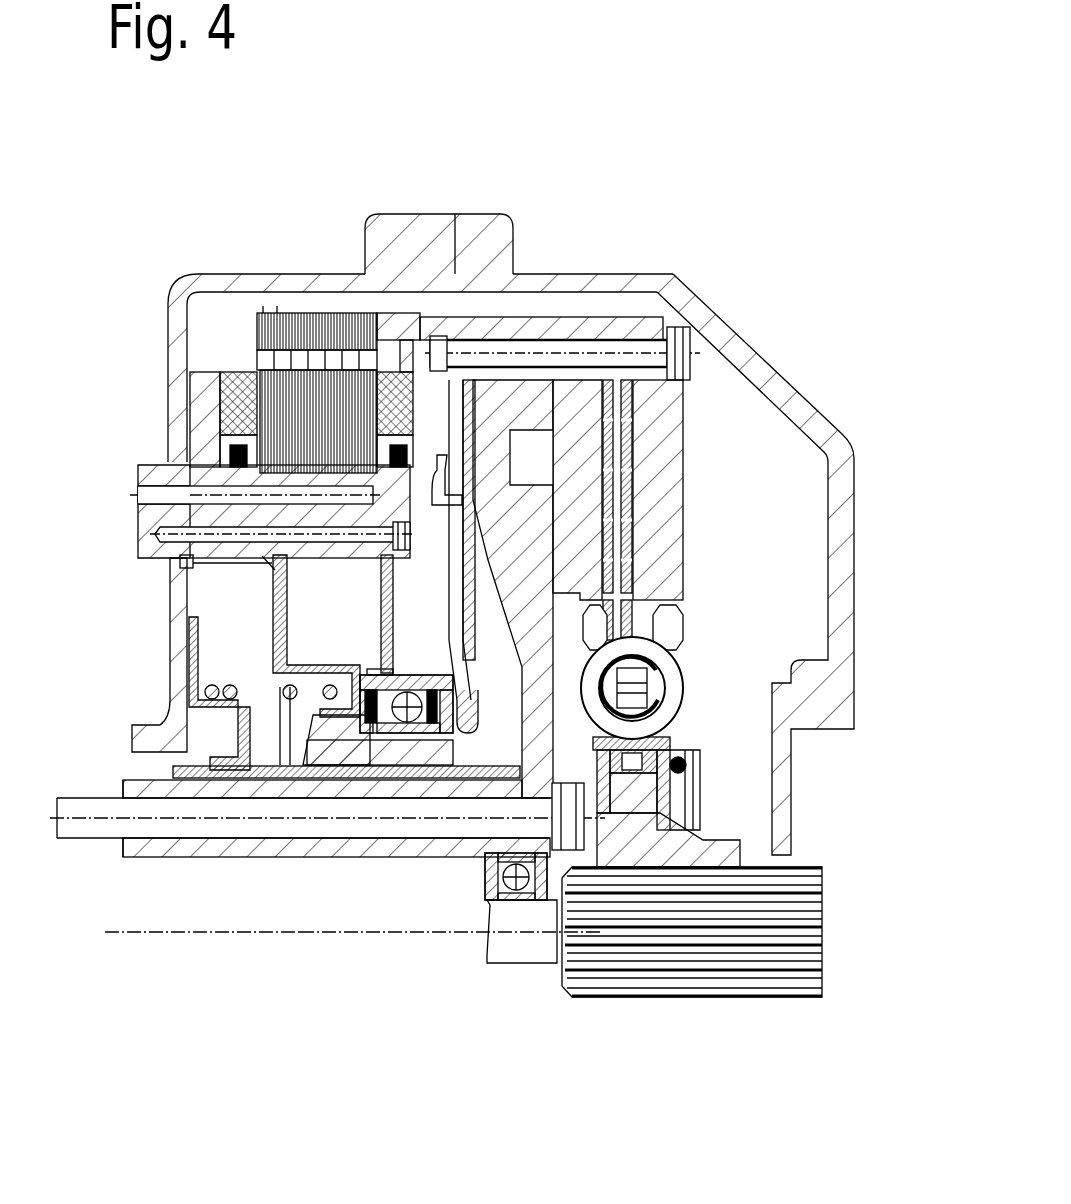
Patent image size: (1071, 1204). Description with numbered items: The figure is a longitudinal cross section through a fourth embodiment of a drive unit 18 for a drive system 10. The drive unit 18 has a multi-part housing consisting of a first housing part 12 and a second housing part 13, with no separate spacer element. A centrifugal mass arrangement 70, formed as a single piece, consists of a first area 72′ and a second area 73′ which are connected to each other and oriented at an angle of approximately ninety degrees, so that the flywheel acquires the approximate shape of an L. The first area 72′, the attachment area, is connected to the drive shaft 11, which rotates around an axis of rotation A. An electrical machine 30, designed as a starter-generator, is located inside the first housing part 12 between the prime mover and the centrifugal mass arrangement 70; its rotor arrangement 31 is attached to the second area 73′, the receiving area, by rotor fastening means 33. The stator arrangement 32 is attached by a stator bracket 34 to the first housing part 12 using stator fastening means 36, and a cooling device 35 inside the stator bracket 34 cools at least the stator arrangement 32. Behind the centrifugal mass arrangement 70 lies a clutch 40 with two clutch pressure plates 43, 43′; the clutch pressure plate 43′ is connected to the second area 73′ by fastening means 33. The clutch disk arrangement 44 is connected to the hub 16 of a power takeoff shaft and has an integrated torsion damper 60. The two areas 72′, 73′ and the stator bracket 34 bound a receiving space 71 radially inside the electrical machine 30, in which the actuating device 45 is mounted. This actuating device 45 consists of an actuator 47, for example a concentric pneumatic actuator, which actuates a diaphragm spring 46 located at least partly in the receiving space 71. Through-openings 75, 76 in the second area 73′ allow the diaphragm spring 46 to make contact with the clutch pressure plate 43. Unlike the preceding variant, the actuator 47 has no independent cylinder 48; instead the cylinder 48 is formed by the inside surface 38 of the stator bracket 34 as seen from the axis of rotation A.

The drive system 10 is at (169, 162).
The drive shaft 11 is at (378, 908).
The first housing part 12 is at (172, 327).
The second housing part 13 is at (742, 340).
The hub 16 is at (688, 997).
The drive unit 18 is at (412, 204).
The electrical machine 30 is at (230, 321).
The rotor arrangement 31 is at (307, 320).
The stator arrangement 32 is at (210, 388).
The fastening means 33 is at (490, 353).
The stator bracket 34 is at (207, 490).
The cooling device 35 is at (157, 470).
The stator fastening means 36 is at (153, 521).
The inside surface 38 is at (197, 563).
The clutch 40 is at (728, 572).
The clutch pressure plate 43 is at (575, 505).
The clutch pressure plate 43′ is at (665, 468).
The clutch disk arrangement 44 is at (630, 512).
The actuating device 45 is at (205, 608).
The diaphragm spring 46 is at (468, 668).
The actuator 47 is at (287, 660).
The cylinder 48 is at (258, 570).
The torsion damper 60 is at (674, 676).
The centrifugal mass arrangement 70 is at (122, 771).
The receiving space 71 is at (401, 657).
The first area 72′ is at (303, 843).
The second area 73′ is at (537, 640).
The through-opening 75 is at (531, 457).
The through-opening 76 is at (508, 520).
The axis of rotation A is at (133, 936).